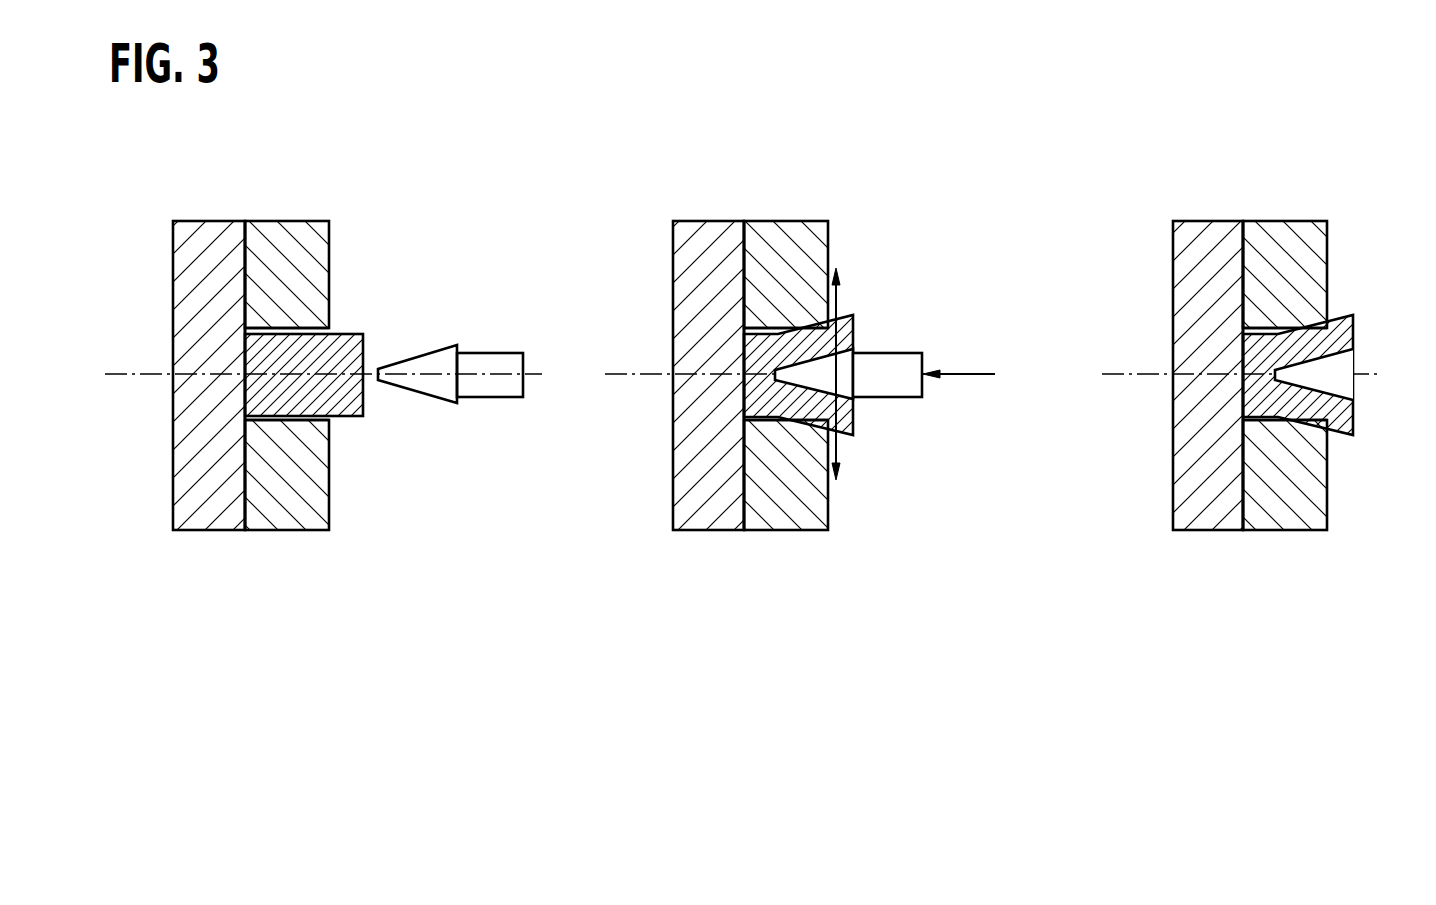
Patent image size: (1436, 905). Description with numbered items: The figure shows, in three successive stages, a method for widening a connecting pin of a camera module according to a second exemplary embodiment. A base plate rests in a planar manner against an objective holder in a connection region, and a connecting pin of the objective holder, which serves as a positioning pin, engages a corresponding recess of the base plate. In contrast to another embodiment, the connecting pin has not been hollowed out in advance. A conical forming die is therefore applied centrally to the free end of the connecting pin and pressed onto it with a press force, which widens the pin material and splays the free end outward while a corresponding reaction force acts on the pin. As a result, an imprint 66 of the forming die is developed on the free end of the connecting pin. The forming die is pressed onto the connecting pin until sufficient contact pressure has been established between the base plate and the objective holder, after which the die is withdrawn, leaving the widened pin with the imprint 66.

The imprint 66 is at (1333, 358).